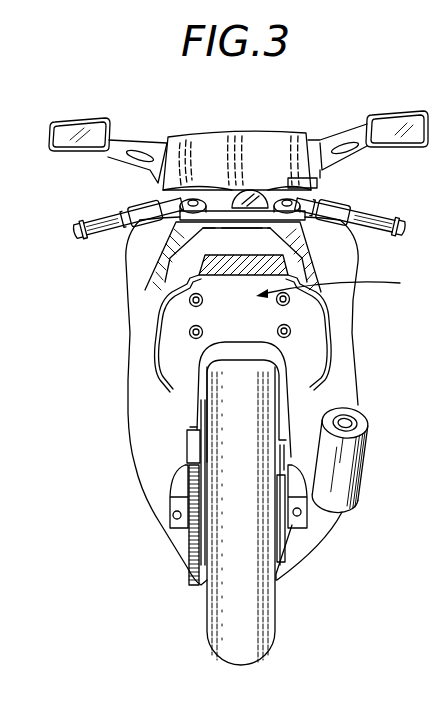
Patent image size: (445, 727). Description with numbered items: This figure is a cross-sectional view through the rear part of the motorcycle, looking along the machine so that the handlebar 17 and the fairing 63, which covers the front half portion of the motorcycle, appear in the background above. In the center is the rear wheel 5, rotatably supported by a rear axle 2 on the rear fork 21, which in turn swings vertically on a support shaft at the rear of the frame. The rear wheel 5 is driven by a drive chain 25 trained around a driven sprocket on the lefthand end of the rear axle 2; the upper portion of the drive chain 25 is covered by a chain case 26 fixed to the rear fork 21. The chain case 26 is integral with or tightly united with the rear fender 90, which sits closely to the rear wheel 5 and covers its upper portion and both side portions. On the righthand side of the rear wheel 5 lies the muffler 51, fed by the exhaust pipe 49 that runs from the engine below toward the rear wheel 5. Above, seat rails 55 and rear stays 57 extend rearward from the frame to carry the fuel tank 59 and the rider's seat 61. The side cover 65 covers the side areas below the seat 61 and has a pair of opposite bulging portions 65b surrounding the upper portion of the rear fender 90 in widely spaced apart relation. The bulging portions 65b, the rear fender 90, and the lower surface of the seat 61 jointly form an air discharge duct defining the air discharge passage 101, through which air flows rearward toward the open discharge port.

The rear axle 2 is at (204, 579).
The rear wheel 5 is at (260, 410).
The handlebar 17 is at (376, 210).
The rear fork 21 is at (177, 480).
The drive chain 25 is at (190, 562).
The chain case 26 is at (190, 442).
The exhaust pipe 49 is at (312, 535).
The muffler 51 is at (365, 467).
The seat rails 55 is at (189, 301).
The rear stays 57 is at (188, 331).
The fuel tank 59 is at (320, 248).
The rider's seat 61 is at (200, 267).
The fairing 63 is at (135, 243).
The side cover 65 is at (148, 386).
The bulging portions 65b is at (152, 367).
The rear fender 90 is at (230, 352).
The air discharge passage 101 is at (434, 298).